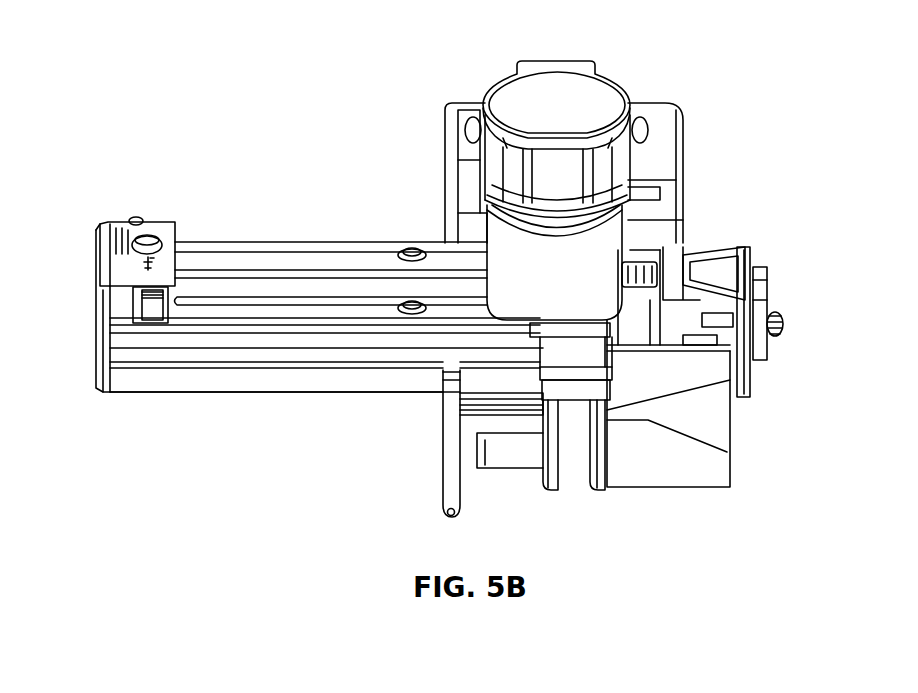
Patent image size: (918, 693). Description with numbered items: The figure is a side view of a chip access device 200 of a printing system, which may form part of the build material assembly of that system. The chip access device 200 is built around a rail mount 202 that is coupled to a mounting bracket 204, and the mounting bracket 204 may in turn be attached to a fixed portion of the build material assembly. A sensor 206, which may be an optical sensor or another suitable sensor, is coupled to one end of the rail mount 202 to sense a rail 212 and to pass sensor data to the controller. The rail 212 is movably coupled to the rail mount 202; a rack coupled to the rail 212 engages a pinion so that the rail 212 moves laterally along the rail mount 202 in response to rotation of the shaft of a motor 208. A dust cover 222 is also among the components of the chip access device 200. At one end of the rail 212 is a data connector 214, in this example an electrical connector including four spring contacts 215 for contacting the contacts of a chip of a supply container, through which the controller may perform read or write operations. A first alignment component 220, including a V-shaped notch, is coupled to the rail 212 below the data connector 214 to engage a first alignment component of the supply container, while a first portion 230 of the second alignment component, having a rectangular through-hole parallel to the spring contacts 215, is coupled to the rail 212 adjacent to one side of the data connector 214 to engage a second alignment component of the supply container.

The chip access device 200 is at (299, 40).
The rail mount 202 is at (278, 283).
The mounting bracket 204 is at (648, 103).
The sensor 206 is at (115, 273).
The motor 208 is at (500, 252).
The rail 212 is at (248, 373).
The data connector 214 is at (768, 290).
The spring contacts 215 is at (782, 328).
The first alignment component 220 is at (693, 395).
The dust cover 222 is at (540, 85).
The first portion of the second alignment component 230 is at (749, 387).